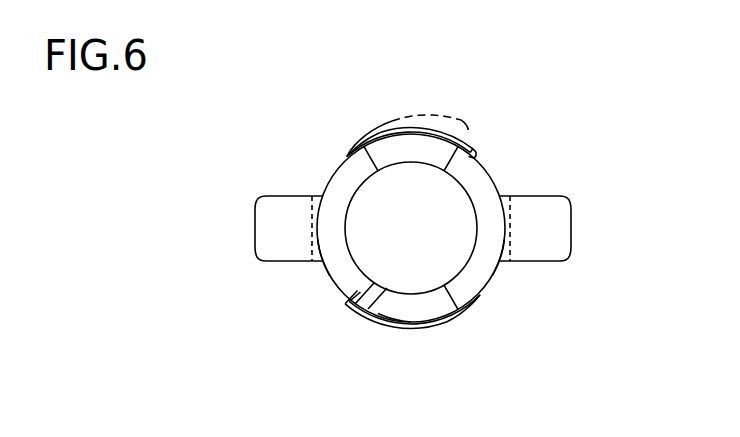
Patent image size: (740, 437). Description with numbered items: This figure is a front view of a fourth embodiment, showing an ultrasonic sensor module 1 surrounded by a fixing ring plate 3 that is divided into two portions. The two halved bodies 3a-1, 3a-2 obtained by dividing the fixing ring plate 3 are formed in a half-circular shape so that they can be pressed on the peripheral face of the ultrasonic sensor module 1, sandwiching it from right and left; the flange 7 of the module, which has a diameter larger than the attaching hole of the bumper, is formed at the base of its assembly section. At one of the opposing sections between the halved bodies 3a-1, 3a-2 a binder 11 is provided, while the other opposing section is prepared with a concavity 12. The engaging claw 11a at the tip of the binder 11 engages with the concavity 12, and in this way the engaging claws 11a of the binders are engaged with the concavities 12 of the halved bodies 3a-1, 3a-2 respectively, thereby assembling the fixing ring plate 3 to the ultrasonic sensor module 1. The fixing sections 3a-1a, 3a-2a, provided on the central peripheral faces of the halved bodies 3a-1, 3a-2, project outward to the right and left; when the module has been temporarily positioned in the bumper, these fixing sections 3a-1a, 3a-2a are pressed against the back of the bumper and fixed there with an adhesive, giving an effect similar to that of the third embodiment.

The ultrasonic sensor module 1 is at (395, 278).
The fixing ring plate 3 is at (336, 171).
The halved body 3a-1 is at (485, 278).
The fixing section 3a-1a is at (548, 251).
The halved body 3a-2 is at (337, 273).
The fixing section 3a-2a is at (278, 252).
The flange 7 is at (393, 316).
The binder 11 is at (398, 122).
The engaging claw 11a is at (468, 130).
The concavity 12 is at (473, 160).